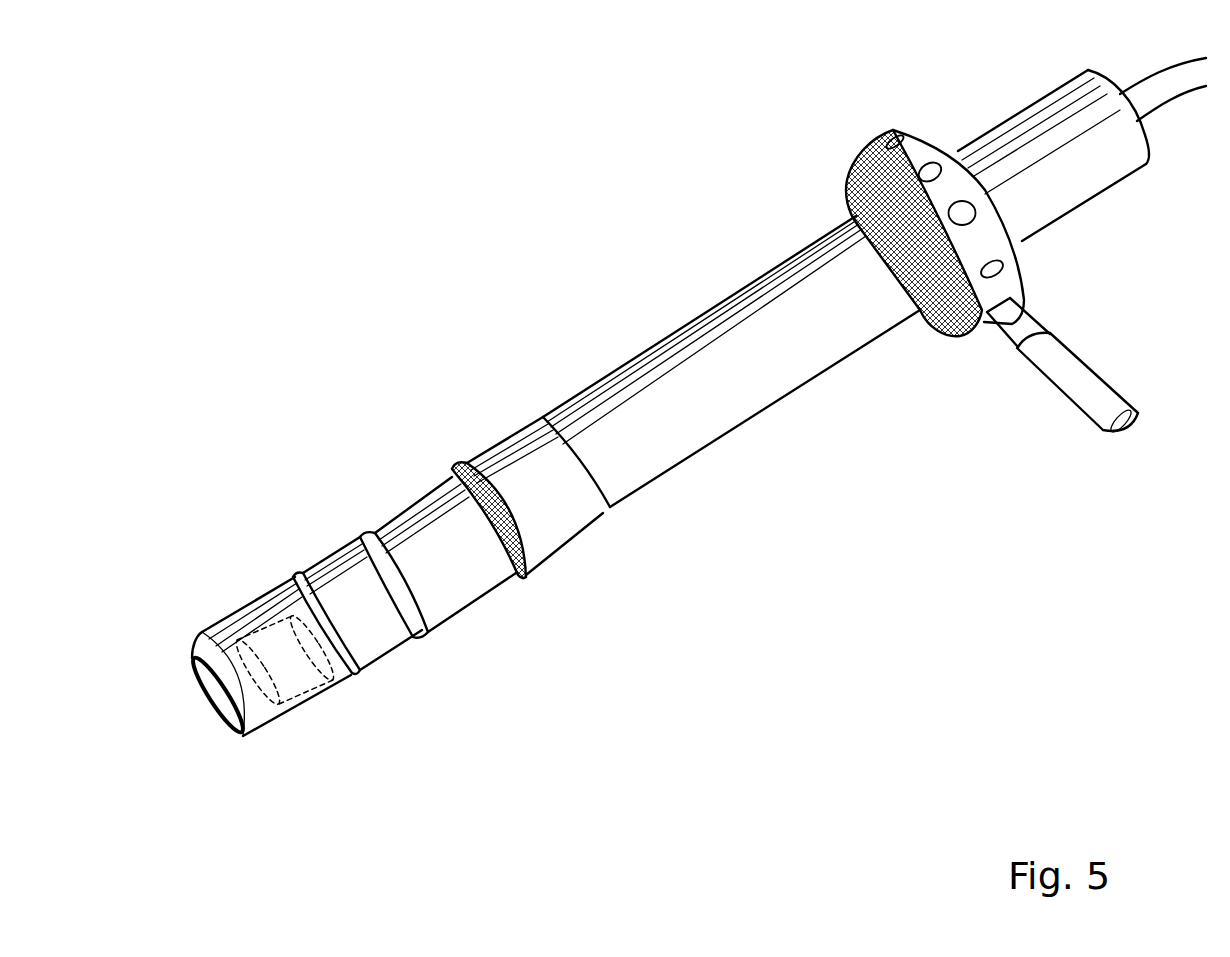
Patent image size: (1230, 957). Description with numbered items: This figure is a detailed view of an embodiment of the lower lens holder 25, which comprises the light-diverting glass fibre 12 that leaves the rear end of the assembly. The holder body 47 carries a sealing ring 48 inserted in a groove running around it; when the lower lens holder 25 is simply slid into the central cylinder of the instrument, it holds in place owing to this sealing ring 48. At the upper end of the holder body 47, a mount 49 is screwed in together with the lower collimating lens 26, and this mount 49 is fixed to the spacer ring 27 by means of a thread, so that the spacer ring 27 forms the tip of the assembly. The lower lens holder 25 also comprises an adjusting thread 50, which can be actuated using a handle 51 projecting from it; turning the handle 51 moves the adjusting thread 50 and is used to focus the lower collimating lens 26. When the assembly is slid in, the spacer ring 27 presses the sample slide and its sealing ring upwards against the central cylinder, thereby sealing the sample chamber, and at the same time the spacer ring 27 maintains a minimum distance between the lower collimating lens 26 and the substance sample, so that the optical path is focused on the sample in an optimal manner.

The light-diverting glass fibre 12 is at (1170, 92).
The lower lens holder 25 is at (597, 324).
The lower collimating lens 26 is at (263, 697).
The spacer ring 27 is at (228, 627).
The lower lens holder 47 is at (767, 362).
The sealing ring 48 is at (532, 567).
The mount 49 is at (282, 648).
The adjusting thread 50 is at (933, 327).
The handle 51 is at (1063, 362).